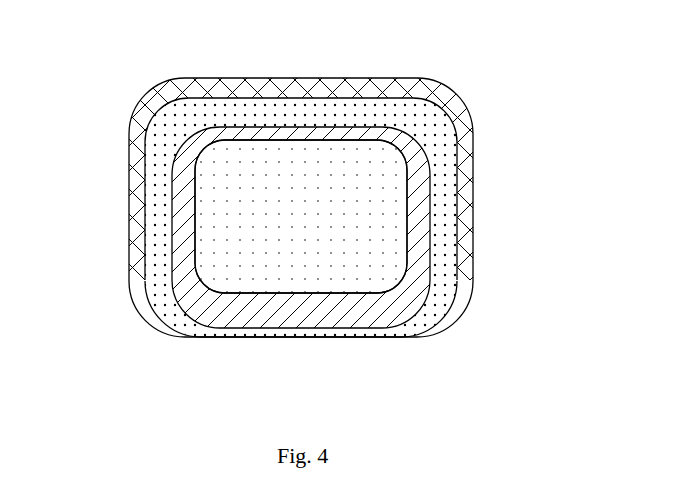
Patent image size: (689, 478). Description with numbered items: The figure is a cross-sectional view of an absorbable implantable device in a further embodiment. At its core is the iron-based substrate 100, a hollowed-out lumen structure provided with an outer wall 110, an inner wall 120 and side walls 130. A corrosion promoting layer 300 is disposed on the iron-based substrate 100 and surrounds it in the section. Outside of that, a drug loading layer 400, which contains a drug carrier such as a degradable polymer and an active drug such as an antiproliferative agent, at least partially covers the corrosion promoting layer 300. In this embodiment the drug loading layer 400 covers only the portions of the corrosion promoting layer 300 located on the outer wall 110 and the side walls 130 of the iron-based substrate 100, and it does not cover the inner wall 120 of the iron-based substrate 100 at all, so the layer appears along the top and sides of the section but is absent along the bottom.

The iron-based substrate 100 is at (384, 251).
The outer wall 110 is at (298, 130).
The inner wall 120 is at (303, 328).
The side walls 130 is at (173, 180).
The corrosion promoting layer 300 is at (190, 318).
The drug loading layer 400 is at (460, 137).